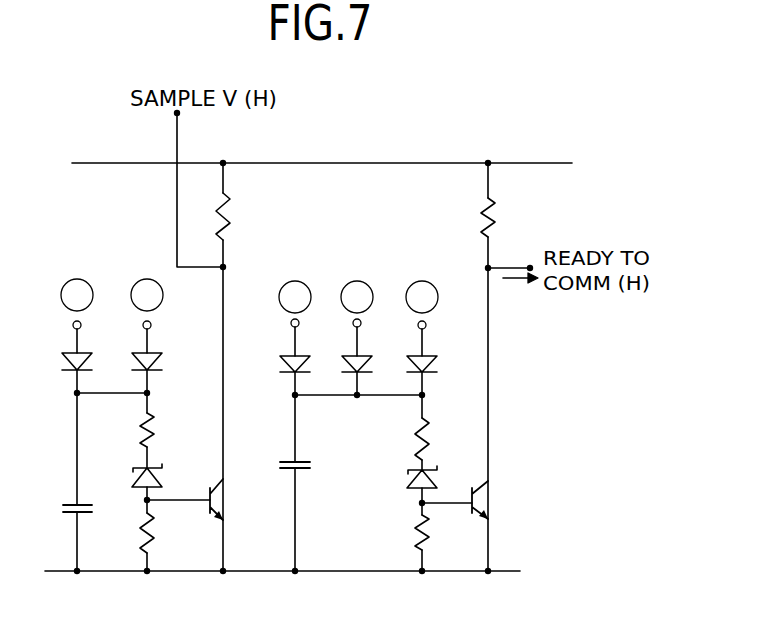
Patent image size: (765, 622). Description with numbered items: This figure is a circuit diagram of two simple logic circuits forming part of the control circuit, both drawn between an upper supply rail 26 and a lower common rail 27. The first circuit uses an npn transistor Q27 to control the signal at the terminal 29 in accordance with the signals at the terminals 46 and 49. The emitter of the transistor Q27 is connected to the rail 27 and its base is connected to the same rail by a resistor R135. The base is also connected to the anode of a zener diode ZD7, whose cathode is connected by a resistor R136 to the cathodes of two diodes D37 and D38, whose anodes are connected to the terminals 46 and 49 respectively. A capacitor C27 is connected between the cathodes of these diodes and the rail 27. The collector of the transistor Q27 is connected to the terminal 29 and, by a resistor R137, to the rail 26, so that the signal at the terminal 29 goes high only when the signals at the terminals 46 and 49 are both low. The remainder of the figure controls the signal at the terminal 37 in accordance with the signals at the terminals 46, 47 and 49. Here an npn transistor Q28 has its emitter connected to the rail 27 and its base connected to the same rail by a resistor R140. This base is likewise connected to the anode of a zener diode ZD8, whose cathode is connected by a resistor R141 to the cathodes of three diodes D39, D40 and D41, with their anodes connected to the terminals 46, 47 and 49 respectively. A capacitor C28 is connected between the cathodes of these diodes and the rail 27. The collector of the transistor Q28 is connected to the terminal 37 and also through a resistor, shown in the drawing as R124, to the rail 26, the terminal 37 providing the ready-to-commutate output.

The rail 26 is at (277, 163).
The rail 27 is at (233, 571).
The terminal 29 is at (180, 113).
The terminal 37 is at (530, 266).
The terminal 46 is at (151, 326).
The terminal 47 is at (418, 323).
The terminal 49 is at (81, 326).
The resistor R137 is at (232, 222).
The resistor R124 is at (500, 217).
The resistor R136 is at (155, 421).
The resistor R135 is at (156, 524).
The resistor R141 is at (412, 450).
The resistor R140 is at (413, 540).
The diode D38 is at (94, 361).
The diode D37 is at (164, 361).
The diode D41 is at (283, 366).
The diode D39 is at (345, 365).
The diode D40 is at (436, 364).
The zener diode ZD7 is at (186, 477).
The zener diode ZD8 is at (410, 477).
The capacitor C27 is at (92, 508).
The capacitor C28 is at (280, 465).
The npn transistor Q27 is at (217, 501).
The npn transistor Q28 is at (480, 498).